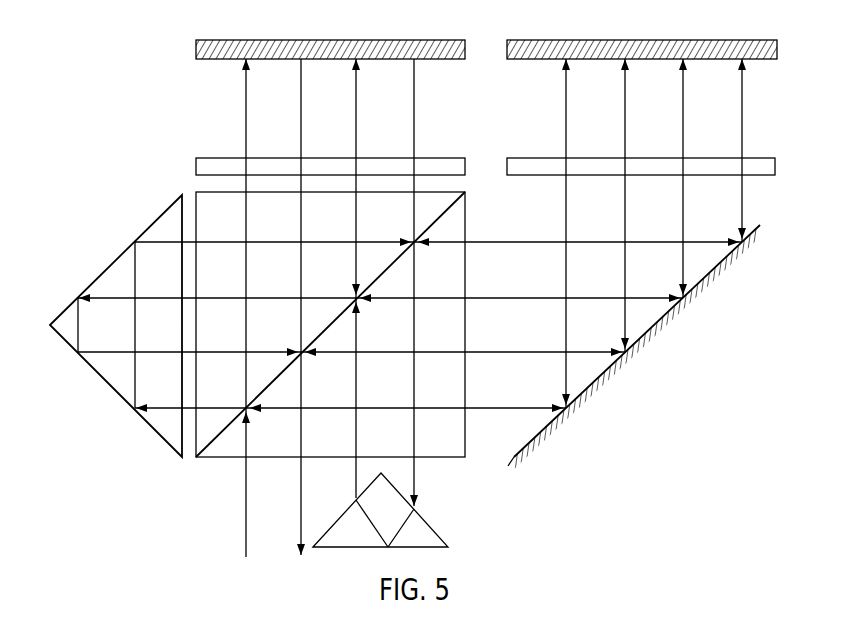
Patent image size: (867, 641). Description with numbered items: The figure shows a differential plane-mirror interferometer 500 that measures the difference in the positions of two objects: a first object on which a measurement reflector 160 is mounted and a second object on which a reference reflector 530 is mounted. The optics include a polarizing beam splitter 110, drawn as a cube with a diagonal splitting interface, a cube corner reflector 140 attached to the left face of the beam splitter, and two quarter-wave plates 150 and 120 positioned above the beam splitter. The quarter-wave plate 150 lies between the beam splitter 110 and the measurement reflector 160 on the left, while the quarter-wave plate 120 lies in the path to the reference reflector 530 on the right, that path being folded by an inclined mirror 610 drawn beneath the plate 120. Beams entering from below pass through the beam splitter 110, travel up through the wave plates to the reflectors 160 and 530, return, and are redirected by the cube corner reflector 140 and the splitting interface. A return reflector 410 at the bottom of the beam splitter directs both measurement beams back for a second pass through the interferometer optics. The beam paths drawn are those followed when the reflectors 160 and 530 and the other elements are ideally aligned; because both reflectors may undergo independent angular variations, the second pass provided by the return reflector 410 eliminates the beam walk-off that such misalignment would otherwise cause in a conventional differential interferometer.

The differential interferometer 500 is at (106, 52).
The measurement reflector 160 is at (335, 42).
The reference reflector 530 is at (595, 42).
The quarter-wave plate 150 is at (196, 166).
The quarter-wave plate 120 is at (752, 157).
The polarizing beam splitter 110 is at (430, 458).
The cube corner reflector 140 is at (112, 386).
The mirror 610 is at (748, 233).
The return reflector 410 is at (365, 542).